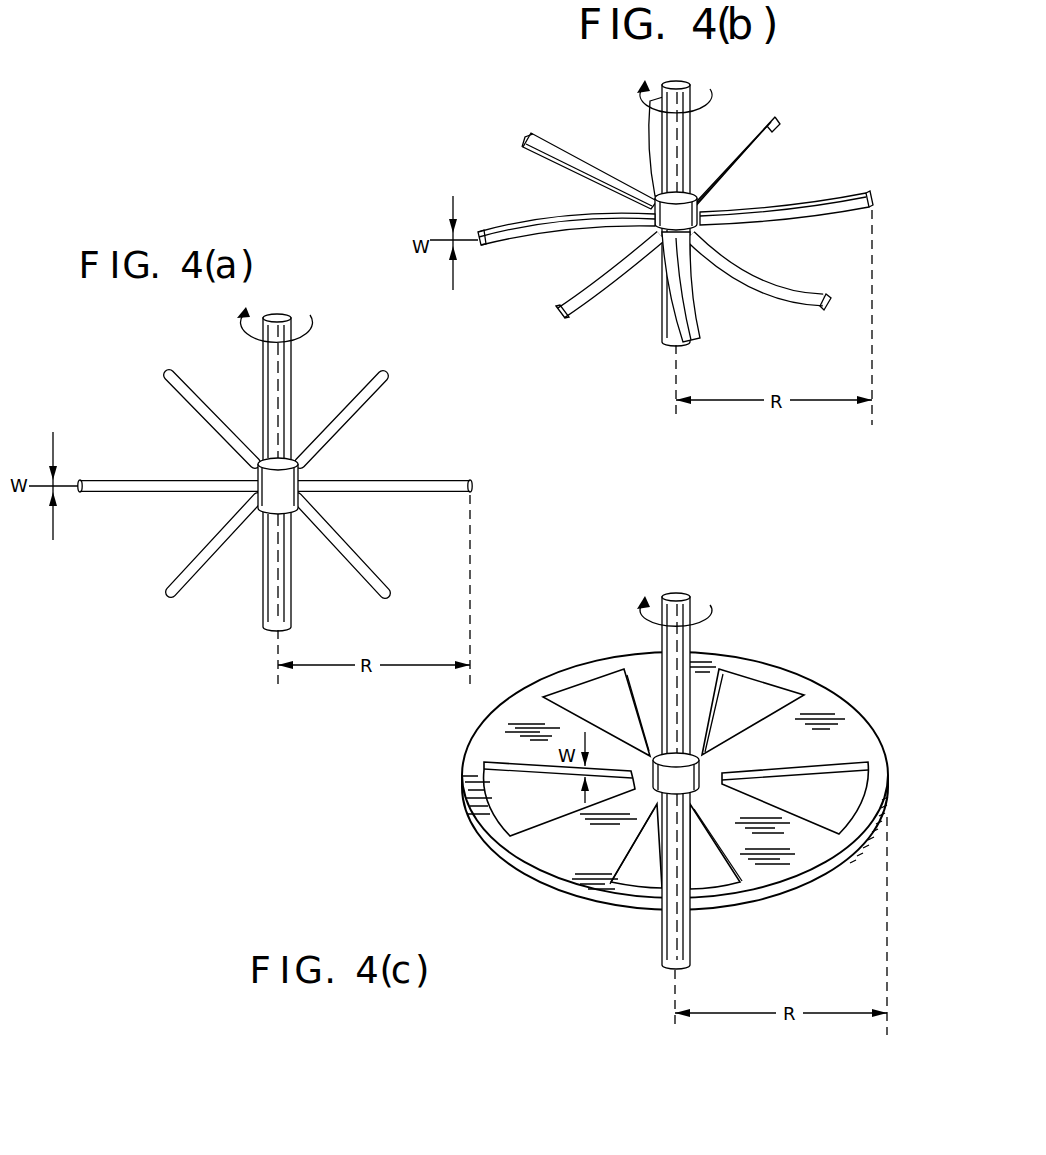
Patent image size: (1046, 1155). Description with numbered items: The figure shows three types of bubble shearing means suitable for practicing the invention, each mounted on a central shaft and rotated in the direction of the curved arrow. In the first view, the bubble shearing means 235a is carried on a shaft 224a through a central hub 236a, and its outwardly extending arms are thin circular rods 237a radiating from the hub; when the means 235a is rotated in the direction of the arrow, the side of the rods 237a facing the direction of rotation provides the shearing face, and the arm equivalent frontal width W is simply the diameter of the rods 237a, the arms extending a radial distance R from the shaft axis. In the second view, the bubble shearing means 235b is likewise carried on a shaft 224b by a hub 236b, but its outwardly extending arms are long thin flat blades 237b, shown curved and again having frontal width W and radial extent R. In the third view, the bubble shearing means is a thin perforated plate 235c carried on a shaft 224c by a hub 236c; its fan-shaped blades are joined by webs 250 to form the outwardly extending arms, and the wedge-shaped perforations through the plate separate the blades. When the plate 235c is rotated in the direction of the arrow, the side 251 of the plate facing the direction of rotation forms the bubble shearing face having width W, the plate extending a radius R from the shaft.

In FIG. 4A, the shaft 224a is at (276, 567).
In FIG. 4A, the bubble shearing means 235a is at (274, 469).
In FIG. 4A, the hub 236a is at (260, 476).
In FIG. 4A, the thin circular rods 237a is at (387, 379).
In FIG. 4C, the thin circular rods 237a is at (558, 677).
In FIG. 4B, the shaft 224b is at (668, 308).
In FIG. 4B, the bubble shearing means 235b is at (675, 213).
In FIG. 4B, the hub 236b is at (699, 197).
In FIG. 4B, the long thin flat blades 237b is at (797, 224).
In FIG. 4C, the shaft 224c is at (678, 942).
In FIG. 4C, the thin perforated plate 235c is at (700, 777).
In FIG. 4C, the hub 236c is at (651, 802).
In FIG. 4C, the webs 250 is at (884, 772).
In FIG. 4C, the side of the plate 251 is at (640, 707).